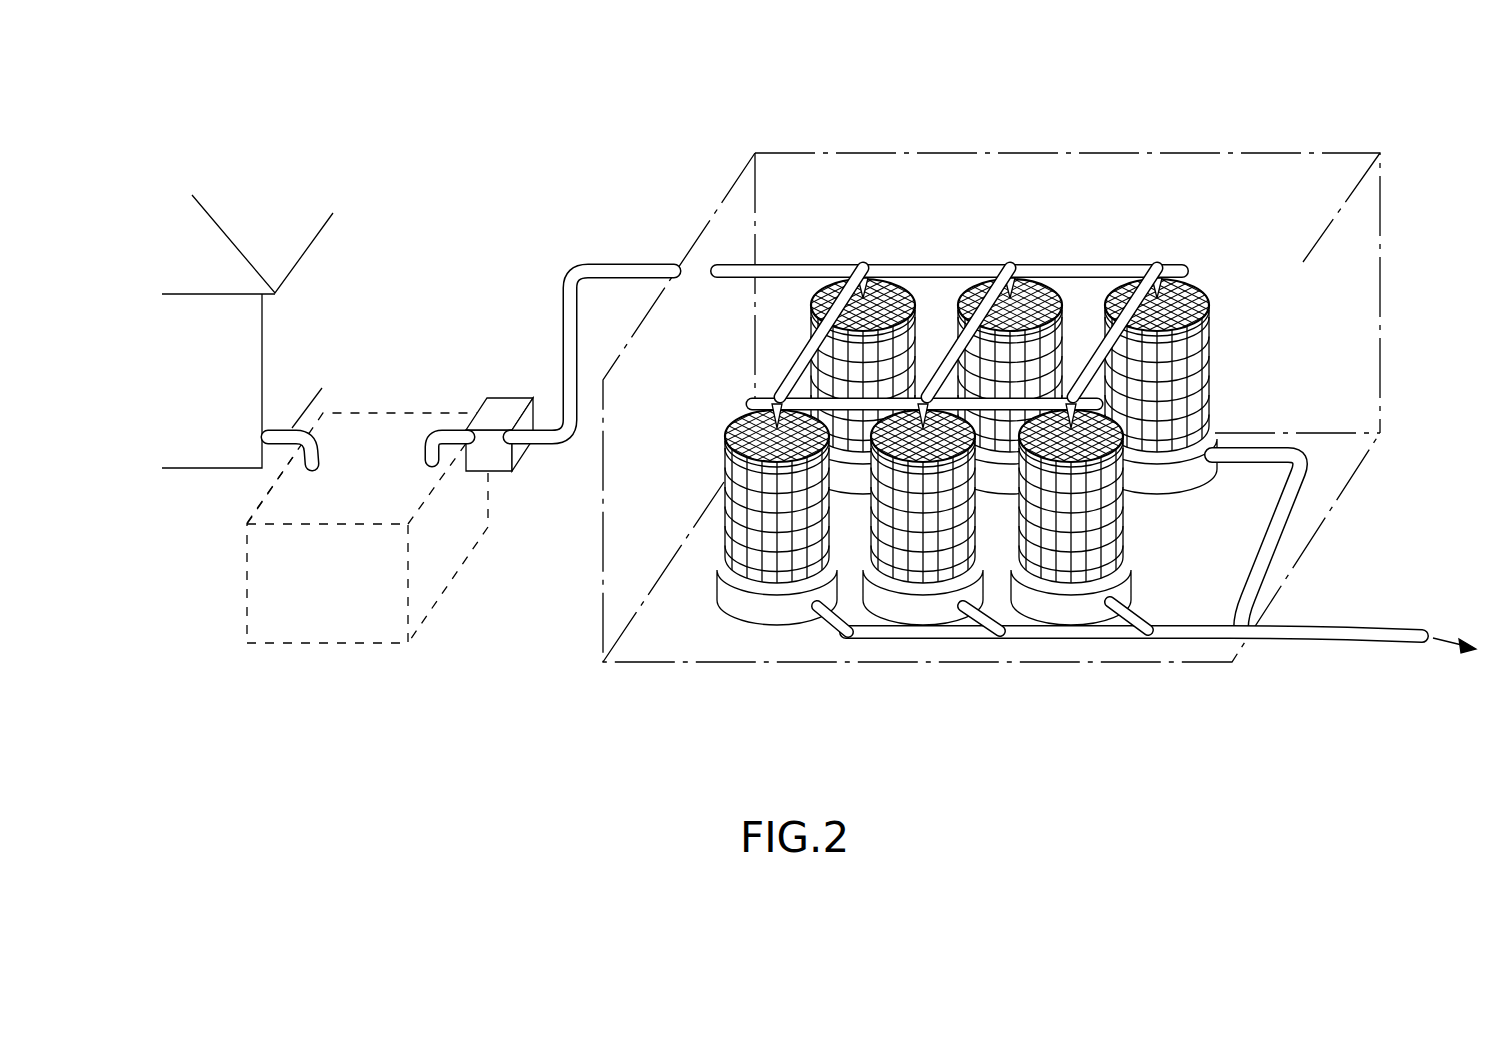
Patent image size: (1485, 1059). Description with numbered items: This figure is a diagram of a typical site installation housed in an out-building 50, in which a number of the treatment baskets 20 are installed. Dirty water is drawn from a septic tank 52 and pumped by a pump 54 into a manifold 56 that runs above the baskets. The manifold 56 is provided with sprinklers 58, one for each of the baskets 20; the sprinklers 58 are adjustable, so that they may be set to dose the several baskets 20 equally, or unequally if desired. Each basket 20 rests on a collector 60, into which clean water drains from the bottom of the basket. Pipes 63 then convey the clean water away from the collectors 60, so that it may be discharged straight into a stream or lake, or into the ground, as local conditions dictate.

The out-building 50 is at (710, 212).
The septic tank 52 is at (362, 615).
The pump 54 is at (493, 462).
The manifold 56 is at (953, 262).
The sprinklers 58 is at (1190, 285).
The basket 20 is at (1192, 377).
The collector 60 is at (1167, 483).
The pipes 63 is at (1272, 532).